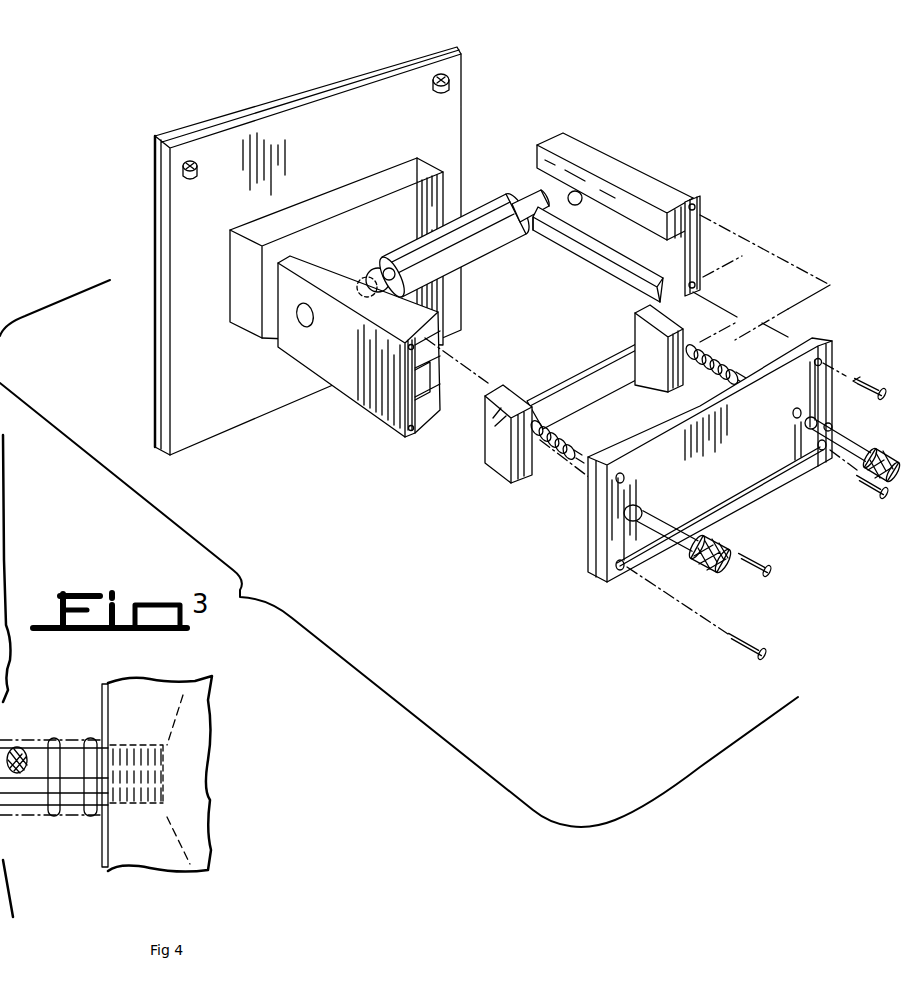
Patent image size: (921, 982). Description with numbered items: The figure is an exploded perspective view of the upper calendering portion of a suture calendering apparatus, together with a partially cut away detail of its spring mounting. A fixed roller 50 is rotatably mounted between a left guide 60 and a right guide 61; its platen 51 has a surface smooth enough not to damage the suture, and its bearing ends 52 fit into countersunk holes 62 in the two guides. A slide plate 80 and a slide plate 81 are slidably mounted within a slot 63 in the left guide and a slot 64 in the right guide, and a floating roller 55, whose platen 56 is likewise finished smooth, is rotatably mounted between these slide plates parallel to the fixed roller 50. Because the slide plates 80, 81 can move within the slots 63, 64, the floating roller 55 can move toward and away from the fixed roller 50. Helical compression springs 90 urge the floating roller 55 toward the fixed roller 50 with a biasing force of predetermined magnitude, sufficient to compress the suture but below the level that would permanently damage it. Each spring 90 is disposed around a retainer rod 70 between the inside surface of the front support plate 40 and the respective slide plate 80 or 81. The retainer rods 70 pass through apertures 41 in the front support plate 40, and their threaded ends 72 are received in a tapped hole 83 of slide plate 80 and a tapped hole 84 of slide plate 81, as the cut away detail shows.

In FIG. 3, the front support plate 40 is at (774, 470).
In FIG. 3, the apertures 41 is at (640, 504).
In FIG. 3, the fixed roller 50 is at (447, 182).
In FIG. 3, the platen 51 is at (500, 242).
In FIG. 3, the bearing ends 52 is at (362, 262).
In FIG. 3, the floating roller 55 is at (606, 340).
In FIG. 3, the platen 56 is at (560, 377).
In FIG. 3, the left guide 60 is at (372, 392).
In FIG. 3, the right guide 61 is at (627, 163).
In FIG. 3, the countersunk holes 62 is at (320, 324).
In FIG. 3, the slot 63 is at (428, 440).
In FIG. 3, the slot 64 is at (572, 254).
In FIG. 3, the retainer rods 70 is at (707, 563).
In FIG. 3, the threaded ends 72 is at (830, 424).
In FIG. 4, the threaded ends 72 is at (133, 810).
In FIG. 3, the slide plate 80 is at (483, 442).
In FIG. 3, the slide plate 81 is at (690, 342).
In FIG. 3, the tapped hole 83 is at (533, 490).
In FIG. 3, the tapped hole 84 is at (722, 365).
In FIG. 4, the tapped hole 84 is at (133, 810).
In FIG. 3, the compression springs 90 is at (565, 475).
In FIG. 4, the compression springs 90 is at (49, 738).